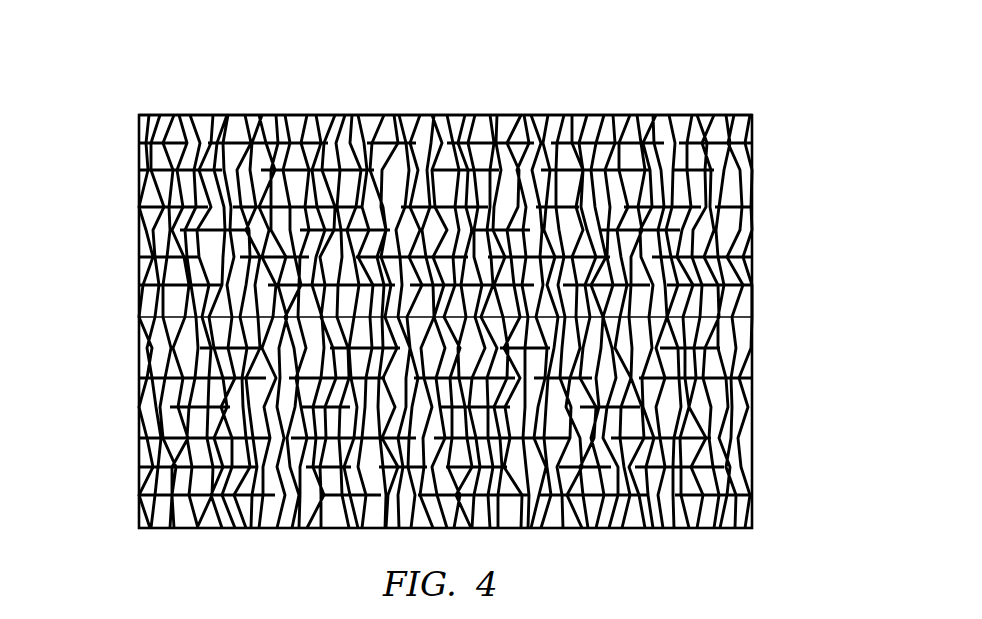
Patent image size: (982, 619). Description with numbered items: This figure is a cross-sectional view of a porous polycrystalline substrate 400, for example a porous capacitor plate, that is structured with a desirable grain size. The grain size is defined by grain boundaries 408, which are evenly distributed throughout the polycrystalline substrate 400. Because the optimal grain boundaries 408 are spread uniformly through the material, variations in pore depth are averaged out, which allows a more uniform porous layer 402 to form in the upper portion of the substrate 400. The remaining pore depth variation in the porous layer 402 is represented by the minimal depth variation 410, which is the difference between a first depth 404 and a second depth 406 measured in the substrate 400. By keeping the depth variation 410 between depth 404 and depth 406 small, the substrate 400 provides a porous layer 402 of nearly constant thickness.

The porous polycrystalline substrate 400 is at (83, 128).
The porous layer 402 is at (130, 317).
The depth 404 is at (746, 356).
The depth 406 is at (265, 345).
The grain boundaries 408 is at (691, 118).
The minimal depth variation 410 is at (757, 312).